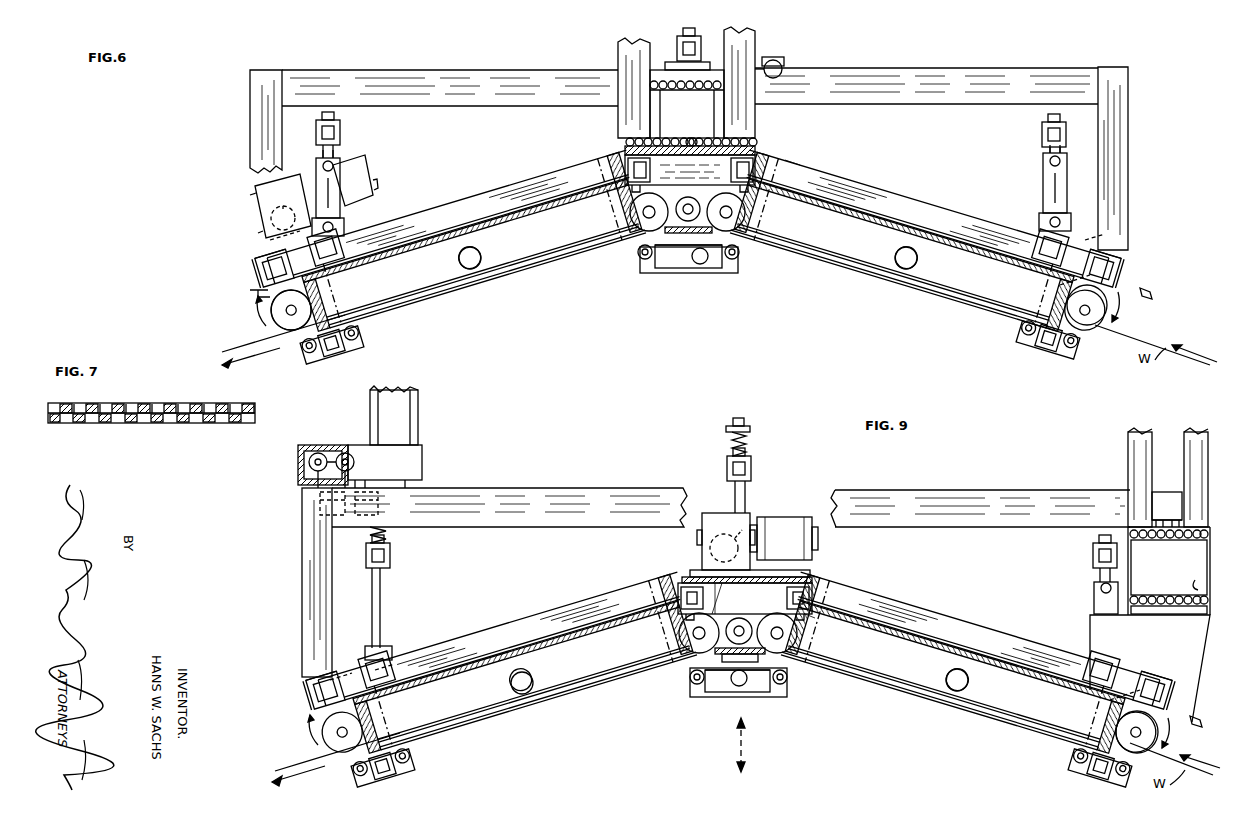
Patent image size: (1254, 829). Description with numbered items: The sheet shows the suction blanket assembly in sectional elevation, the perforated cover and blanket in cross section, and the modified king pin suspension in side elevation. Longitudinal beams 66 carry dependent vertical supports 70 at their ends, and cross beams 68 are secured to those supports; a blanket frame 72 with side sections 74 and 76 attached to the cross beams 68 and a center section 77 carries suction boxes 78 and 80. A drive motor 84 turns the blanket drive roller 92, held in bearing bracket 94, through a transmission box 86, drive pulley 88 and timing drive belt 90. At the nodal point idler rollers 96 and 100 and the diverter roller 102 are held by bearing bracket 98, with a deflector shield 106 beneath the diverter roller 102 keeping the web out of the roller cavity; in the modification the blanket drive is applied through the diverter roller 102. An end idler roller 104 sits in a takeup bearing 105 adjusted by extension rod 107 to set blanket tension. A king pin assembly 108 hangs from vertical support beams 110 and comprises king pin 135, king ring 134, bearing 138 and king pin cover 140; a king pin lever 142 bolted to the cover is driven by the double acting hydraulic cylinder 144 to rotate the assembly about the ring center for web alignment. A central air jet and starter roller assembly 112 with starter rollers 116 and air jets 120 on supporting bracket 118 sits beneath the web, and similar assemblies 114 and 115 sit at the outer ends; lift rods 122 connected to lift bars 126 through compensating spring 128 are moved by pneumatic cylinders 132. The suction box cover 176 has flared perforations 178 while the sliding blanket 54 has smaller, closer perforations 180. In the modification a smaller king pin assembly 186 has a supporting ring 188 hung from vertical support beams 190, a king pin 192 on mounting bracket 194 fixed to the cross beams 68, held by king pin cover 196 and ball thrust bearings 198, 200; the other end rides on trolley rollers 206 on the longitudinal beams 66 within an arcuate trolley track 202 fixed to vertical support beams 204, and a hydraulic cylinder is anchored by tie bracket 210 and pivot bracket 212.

In FIG. 7, the suction blanket 54 is at (151, 413).
In FIG. 6, the longitudinal beams 66 is at (915, 68).
In FIG. 9, the longitudinal beams 66 is at (975, 488).
In FIG. 6, the cross beams 68 is at (1096, 255).
In FIG. 9, the cross beams 68 is at (372, 665).
In FIG. 6, the vertical supports 70 is at (250, 128).
In FIG. 9, the vertical supports 70 is at (302, 592).
In FIG. 6, the blanket frame 72 is at (802, 166).
In FIG. 9, the blanket frame 72 is at (636, 588).
In FIG. 6, the side section 74 is at (925, 185).
In FIG. 9, the side section 74 is at (963, 601).
In FIG. 6, the side section 76 is at (485, 176).
In FIG. 9, the side section 76 is at (542, 598).
In FIG. 9, the center section 77 is at (802, 580).
In FIG. 6, the suction box 78 is at (940, 256).
In FIG. 9, the suction box 78 is at (896, 660).
In FIG. 6, the suction box 80 is at (530, 228).
In FIG. 9, the suction box 80 is at (558, 656).
In FIG. 6, the drive motor 84 is at (345, 162).
In FIG. 9, the drive motor 84 is at (796, 526).
In FIG. 6, the transmission box 86 is at (285, 185).
In FIG. 9, the transmission box 86 is at (718, 525).
In FIG. 6, the drive pulley 88 is at (290, 208).
In FIG. 9, the drive pulley 88 is at (727, 540).
In FIG. 6, the timing drive belt 90 is at (268, 232).
In FIG. 9, the timing drive belt 90 is at (710, 622).
In FIG. 6, the blanket drive roller 92 is at (268, 310).
In FIG. 6, the bearing bracket 94 is at (262, 291).
In FIG. 6, the idler roller 96 is at (628, 200).
In FIG. 9, the idler roller 96 is at (708, 660).
In FIG. 9, the bearing bracket 98 is at (810, 616).
In FIG. 6, the idler roller 100 is at (740, 202).
In FIG. 9, the idler roller 100 is at (783, 648).
In FIG. 6, the diverter roller 102 is at (692, 198).
In FIG. 9, the diverter roller 102 is at (746, 620).
In FIG. 6, the end idler roller 104 is at (1115, 305).
In FIG. 9, the end idler roller 104 is at (1165, 730).
In FIG. 6, the takeup bearing 105 is at (1075, 281).
In FIG. 9, the takeup bearing 105 is at (1148, 706).
In FIG. 6, the deflector shield 106 is at (702, 233).
In FIG. 6, the extension rod 107 is at (1150, 292).
In FIG. 9, the extension rod 107 is at (1205, 720).
In FIG. 6, the king pin assembly 108 is at (821, 102).
In FIG. 6, the vertical support beams 110 is at (618, 54).
In FIG. 6, the central air jet and starter roller assembly 112 is at (705, 270).
In FIG. 9, the central air jet and starter roller assembly 112 is at (755, 687).
In FIG. 6, the starter roller and air jet assembly 114 is at (1058, 358).
In FIG. 9, the starter roller and air jet assembly 114 is at (1095, 782).
In FIG. 6, the starter roller and air jet assembly 115 is at (355, 346).
In FIG. 9, the starter roller and air jet assembly 115 is at (385, 782).
In FIG. 9, the starter rollers 116 is at (790, 686).
In FIG. 6, the supporting bracket 118 is at (700, 274).
In FIG. 9, the supporting bracket 118 is at (742, 698).
In FIG. 6, the air jets 120 is at (722, 242).
In FIG. 9, the lift rods 122 is at (746, 492).
In FIG. 6, the lift bars 126 is at (683, 38).
In FIG. 9, the lift bars 126 is at (390, 556).
In FIG. 9, the compensating spring 128 is at (752, 438).
In FIG. 6, the pneumatic cylinders 132 is at (350, 208).
In FIG. 9, the pneumatic cylinders 132 is at (1092, 598).
In FIG. 6, the king ring 134 is at (687, 104).
In FIG. 6, the king pin 135 is at (758, 150).
In FIG. 6, the ball thrust bearing 138 is at (688, 138).
In FIG. 6, the king pin cover 140 is at (660, 78).
In FIG. 6, the king pin lever 142 is at (712, 70).
In FIG. 6, the double acting hydraulic cylinder 144 is at (781, 62).
In FIG. 7, the suction box cover 176 is at (160, 403).
In FIG. 7, the perforations 178 is at (200, 403).
In FIG. 7, the perforations 180 is at (237, 425).
In FIG. 9, the king pin assembly 186 is at (1225, 549).
In FIG. 9, the king pin supporting ring 188 is at (1198, 588).
In FIG. 9, the vertical support beams 190 is at (1193, 436).
In FIG. 9, the king pin 192 is at (1196, 608).
In FIG. 9, the mounting bracket 194 is at (1186, 662).
In FIG. 9, the king pin cover 196 is at (1167, 509).
In FIG. 9, the ball thrust bearing 198 is at (1170, 600).
In FIG. 9, the ball thrust bearing 200 is at (1180, 540).
In FIG. 9, the arcuate trolley track 202 is at (424, 472).
In FIG. 9, the vertical support beams 204 is at (420, 422).
In FIG. 9, the trolley rollers 206 is at (358, 470).
In FIG. 9, the tie bracket 210 is at (318, 508).
In FIG. 9, the pivot bracket 212 is at (378, 512).